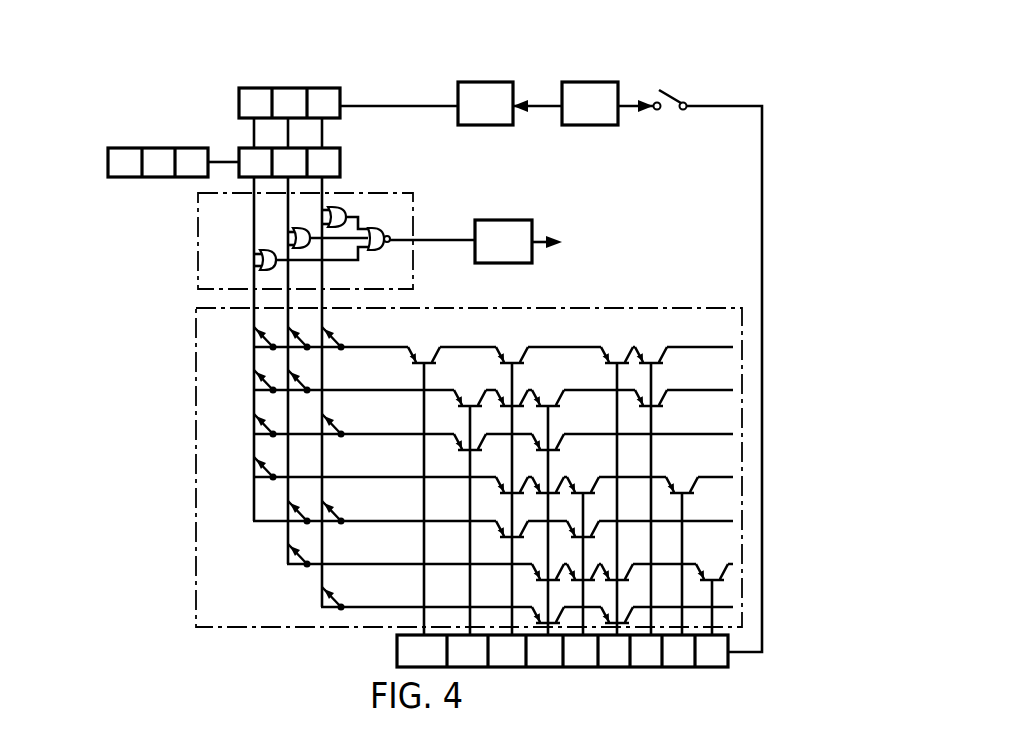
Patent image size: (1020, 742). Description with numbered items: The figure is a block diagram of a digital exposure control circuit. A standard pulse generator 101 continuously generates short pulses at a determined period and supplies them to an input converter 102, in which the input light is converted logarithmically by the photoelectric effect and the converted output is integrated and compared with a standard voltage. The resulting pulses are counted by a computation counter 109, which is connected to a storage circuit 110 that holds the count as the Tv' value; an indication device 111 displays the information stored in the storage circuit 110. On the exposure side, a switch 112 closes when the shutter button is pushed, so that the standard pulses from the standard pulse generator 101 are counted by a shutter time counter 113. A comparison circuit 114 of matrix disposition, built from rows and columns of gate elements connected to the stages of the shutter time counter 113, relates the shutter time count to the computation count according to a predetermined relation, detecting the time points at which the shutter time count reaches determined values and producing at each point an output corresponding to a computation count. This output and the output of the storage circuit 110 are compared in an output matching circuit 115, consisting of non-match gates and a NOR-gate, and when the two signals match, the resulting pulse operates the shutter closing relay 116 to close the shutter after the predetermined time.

The standard pulse generator 101 is at (593, 82).
The input converter 102 is at (458, 82).
The computation counter 109 is at (239, 104).
The storage circuit 110 is at (340, 160).
The indication device 111 is at (108, 177).
The switch 112 is at (668, 110).
The shutter time counter 113 is at (397, 650).
The comparison circuit 114 is at (643, 308).
The output matching circuit 115 is at (198, 257).
The shutter closing relay 116 is at (532, 228).